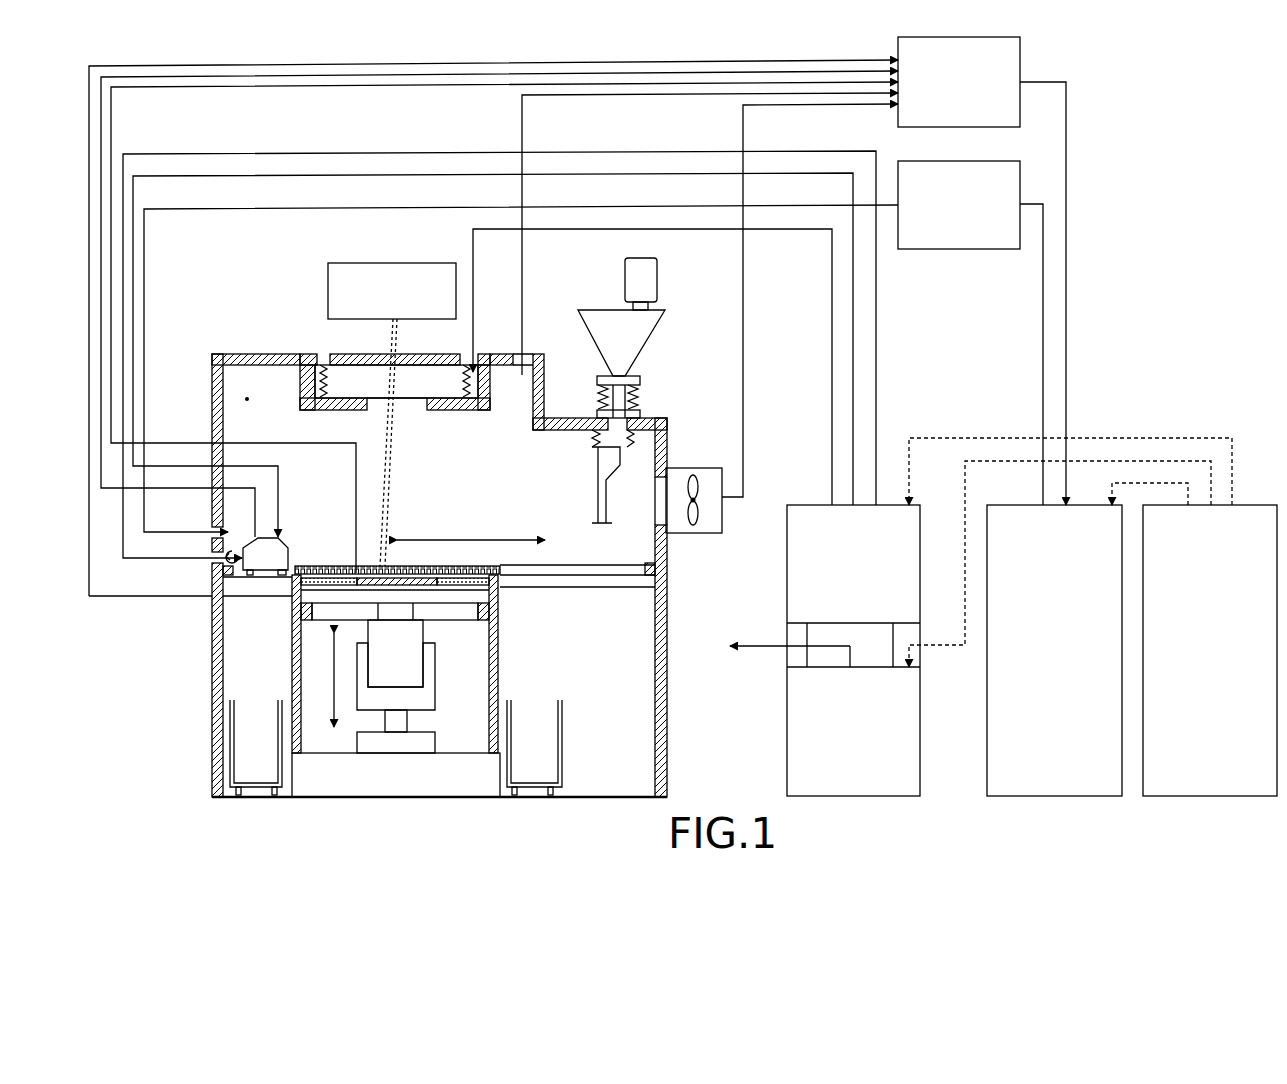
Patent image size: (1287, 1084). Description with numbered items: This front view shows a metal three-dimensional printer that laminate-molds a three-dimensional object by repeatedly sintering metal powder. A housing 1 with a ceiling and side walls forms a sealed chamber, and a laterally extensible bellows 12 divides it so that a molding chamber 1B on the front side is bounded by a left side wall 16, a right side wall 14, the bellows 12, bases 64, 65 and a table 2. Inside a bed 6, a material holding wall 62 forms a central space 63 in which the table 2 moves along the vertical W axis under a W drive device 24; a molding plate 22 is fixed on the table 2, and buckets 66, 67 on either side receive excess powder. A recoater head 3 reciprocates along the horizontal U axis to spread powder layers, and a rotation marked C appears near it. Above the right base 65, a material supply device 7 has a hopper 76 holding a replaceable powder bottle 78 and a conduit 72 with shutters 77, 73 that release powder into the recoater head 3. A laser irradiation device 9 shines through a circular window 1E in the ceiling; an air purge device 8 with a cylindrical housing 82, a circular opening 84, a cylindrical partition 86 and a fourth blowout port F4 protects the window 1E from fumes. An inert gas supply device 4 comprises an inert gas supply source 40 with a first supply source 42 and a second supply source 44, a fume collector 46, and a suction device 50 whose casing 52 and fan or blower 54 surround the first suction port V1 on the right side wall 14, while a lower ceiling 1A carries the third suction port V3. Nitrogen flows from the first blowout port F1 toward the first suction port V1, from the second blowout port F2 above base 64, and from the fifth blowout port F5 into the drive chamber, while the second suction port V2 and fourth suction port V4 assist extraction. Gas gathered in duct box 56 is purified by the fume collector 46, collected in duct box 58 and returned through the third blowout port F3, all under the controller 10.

The housing 1 is at (212, 382).
The lower ceiling 1A is at (647, 417).
The molding chamber 1B is at (232, 425).
The window 1E is at (413, 355).
The table 2 is at (500, 600).
The recoater head 3 is at (283, 540).
The inert gas supply device 4 is at (953, 797).
The bed 6 is at (655, 668).
The material supply device 7 is at (629, 386).
The air purge device 8 is at (360, 363).
The laser irradiation device 9 is at (404, 263).
The controller 10 is at (1245, 505).
The bellows 12 is at (247, 399).
The right side wall 14 is at (662, 437).
The left side wall 16 is at (212, 495).
The molding plate 22 is at (357, 590).
The W drive device 24 is at (438, 713).
The inert gas supply source 40 is at (817, 650).
The first supply source 42 is at (787, 565).
The second supply source 44 is at (787, 727).
The fume collector 46 is at (1049, 790).
The suction device 50 is at (715, 498).
The casing 52 is at (682, 467).
The fan or blower 54 is at (697, 503).
The duct box 56 is at (1020, 62).
The duct box 58 is at (1020, 172).
The material holding wall 62 is at (310, 737).
The central space 63 is at (442, 632).
The base 64 is at (240, 585).
The base 65 is at (667, 580).
The bucket 66 is at (230, 752).
The bucket 67 is at (553, 747).
The conduit 72 is at (608, 460).
The shutter 73 is at (597, 520).
The hopper 76 is at (613, 308).
The shutter 77 is at (598, 397).
The powder bottle 78 is at (657, 280).
The cylindrical housing 82 is at (300, 387).
The circular opening 84 is at (410, 407).
The cylindrical partition 86 is at (323, 380).
The rotation direction C is at (232, 557).
The first blowout port F1 is at (293, 558).
The second blowout port F2 is at (227, 567).
The third blowout port F3 is at (210, 525).
The fourth blowout port F4 is at (476, 346).
The fifth blowout port F5 is at (776, 646).
The U axis U is at (471, 526).
The first suction port V1 is at (662, 503).
The second suction port V2 is at (240, 600).
The third suction port V3 is at (530, 353).
The fourth suction port V4 is at (335, 567).
The W axis W is at (318, 680).